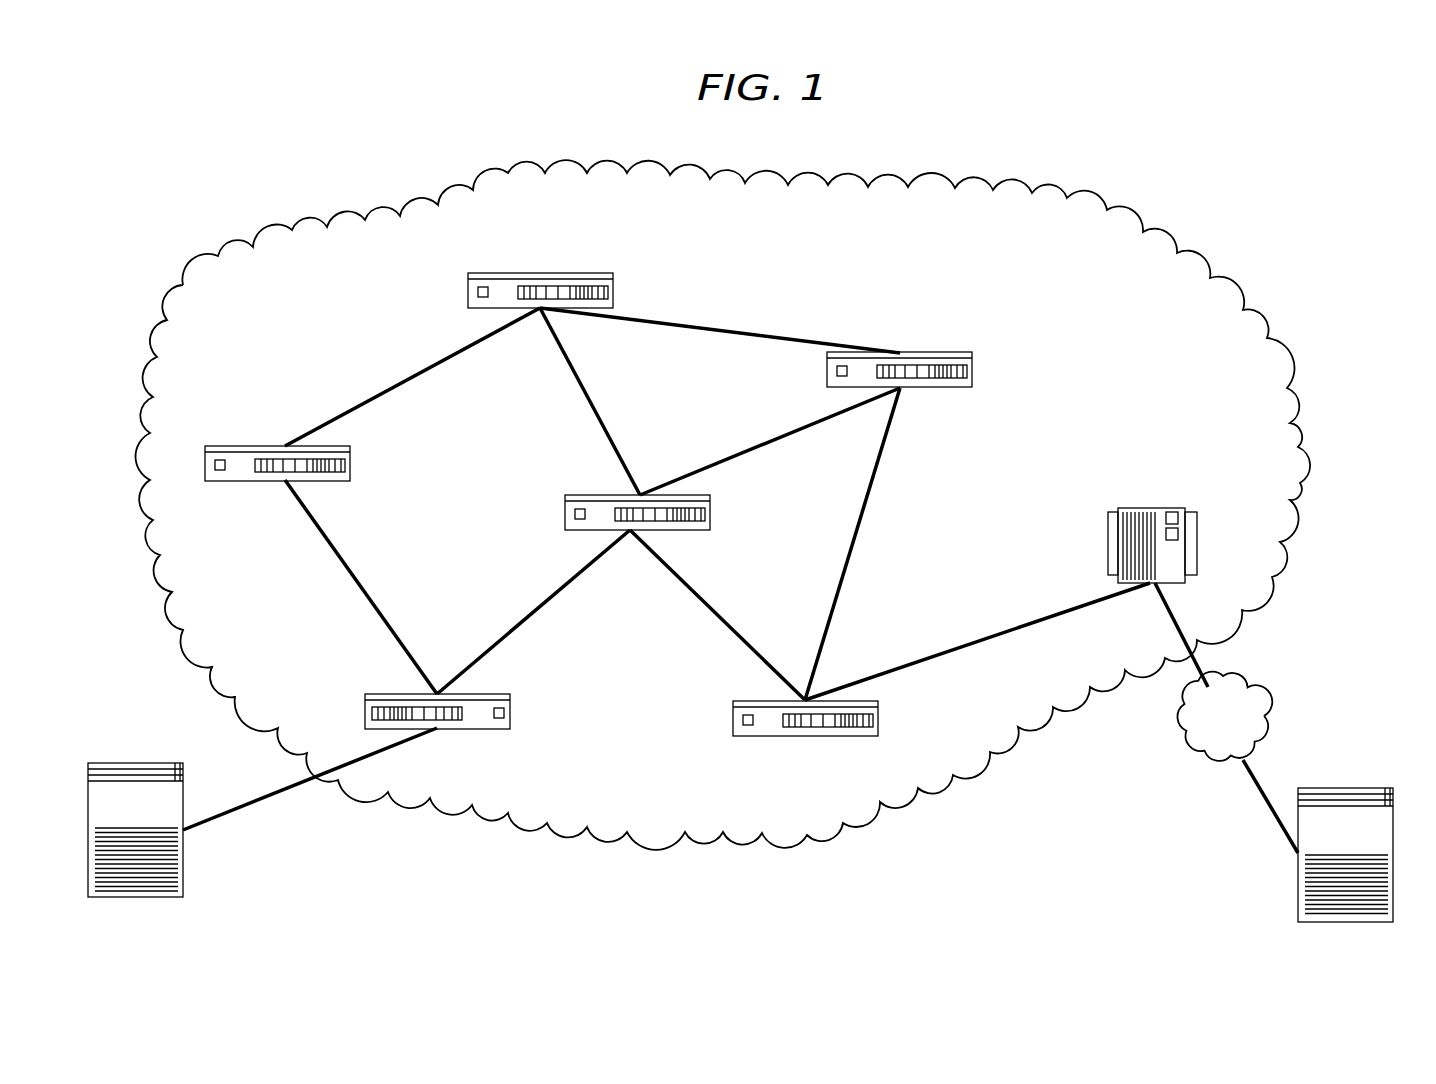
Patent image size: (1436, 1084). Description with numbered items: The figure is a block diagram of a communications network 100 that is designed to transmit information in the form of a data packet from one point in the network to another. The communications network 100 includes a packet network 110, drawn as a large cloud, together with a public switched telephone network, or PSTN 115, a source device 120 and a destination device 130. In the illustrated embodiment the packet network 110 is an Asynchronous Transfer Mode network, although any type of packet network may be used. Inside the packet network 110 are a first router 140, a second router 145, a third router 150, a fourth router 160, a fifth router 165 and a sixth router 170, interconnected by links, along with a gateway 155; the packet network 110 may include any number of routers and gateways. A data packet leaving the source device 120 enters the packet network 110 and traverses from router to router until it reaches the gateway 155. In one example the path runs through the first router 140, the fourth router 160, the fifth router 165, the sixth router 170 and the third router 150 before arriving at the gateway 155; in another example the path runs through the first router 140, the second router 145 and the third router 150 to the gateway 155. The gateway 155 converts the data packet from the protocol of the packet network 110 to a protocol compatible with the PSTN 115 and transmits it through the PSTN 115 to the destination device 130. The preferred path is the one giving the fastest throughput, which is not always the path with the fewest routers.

The communications network 100 is at (1234, 239).
The packet network 110 is at (1300, 483).
The public switched telephone network (PSTN) 115 is at (1265, 688).
The source device 120 is at (138, 763).
The destination device 130 is at (1345, 788).
The first router 140 is at (510, 715).
The second router 145 is at (710, 519).
The third router 150 is at (878, 722).
The gateway 155 is at (1152, 508).
The fourth router 160 is at (350, 468).
The fifth router 165 is at (613, 297).
The sixth router 170 is at (973, 377).